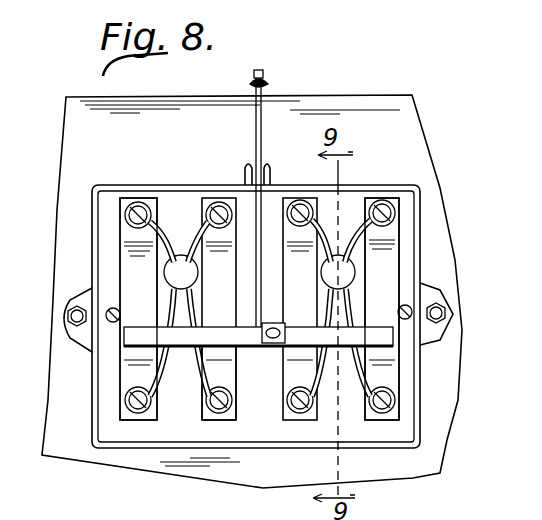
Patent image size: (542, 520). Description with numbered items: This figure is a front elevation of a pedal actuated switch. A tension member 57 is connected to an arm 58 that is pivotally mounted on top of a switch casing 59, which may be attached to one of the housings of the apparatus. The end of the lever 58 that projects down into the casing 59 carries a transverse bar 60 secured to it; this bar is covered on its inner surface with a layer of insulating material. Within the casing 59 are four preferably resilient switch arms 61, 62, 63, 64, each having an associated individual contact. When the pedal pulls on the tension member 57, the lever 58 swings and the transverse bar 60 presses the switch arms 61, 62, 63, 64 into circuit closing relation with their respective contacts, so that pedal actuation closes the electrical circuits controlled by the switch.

The tension member 57 is at (267, 80).
The arm 58 is at (261, 117).
The switch casing 59 is at (420, 188).
The transverse bar 60 is at (385, 340).
The switch arm 61 is at (388, 278).
The switch arm 62 is at (289, 354).
The switch arm 63 is at (232, 352).
The switch arm 64 is at (132, 312).